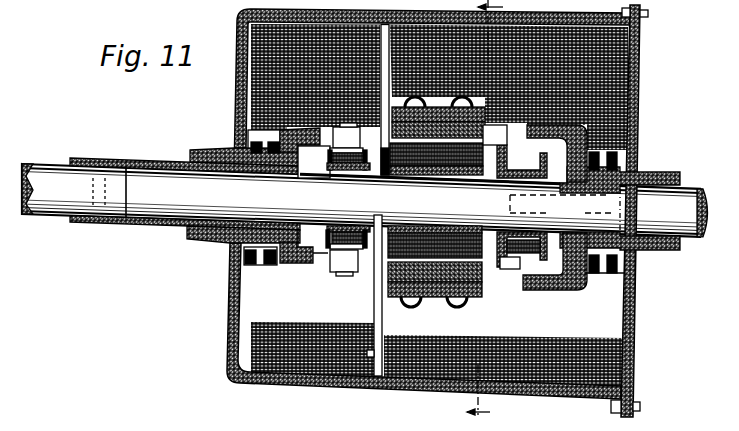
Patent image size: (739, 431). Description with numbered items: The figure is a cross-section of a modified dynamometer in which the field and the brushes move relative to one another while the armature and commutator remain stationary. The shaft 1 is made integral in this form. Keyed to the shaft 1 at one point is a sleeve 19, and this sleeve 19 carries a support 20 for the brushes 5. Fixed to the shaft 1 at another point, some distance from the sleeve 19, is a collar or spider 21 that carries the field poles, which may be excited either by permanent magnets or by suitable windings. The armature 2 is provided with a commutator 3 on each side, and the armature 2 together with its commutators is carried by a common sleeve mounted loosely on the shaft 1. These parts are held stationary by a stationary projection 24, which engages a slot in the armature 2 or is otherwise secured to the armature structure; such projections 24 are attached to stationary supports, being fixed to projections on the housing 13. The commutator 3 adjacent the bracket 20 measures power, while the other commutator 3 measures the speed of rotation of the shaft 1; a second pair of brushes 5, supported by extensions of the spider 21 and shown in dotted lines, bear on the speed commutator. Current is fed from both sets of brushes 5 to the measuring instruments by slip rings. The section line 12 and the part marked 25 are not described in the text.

The shaft 1 is at (44, 163).
The armature 2 is at (489, 124).
The commutator 3 is at (326, 162).
The brushes 5 is at (343, 126).
The section line 12 is at (478, 215).
The housing 13 is at (238, 77).
The sleeve 19 is at (158, 158).
The support 20 is at (333, 130).
The collar or spider 21 is at (606, 157).
The stationary projection 24 is at (391, 80).
The shaft collar 25 is at (425, 183).